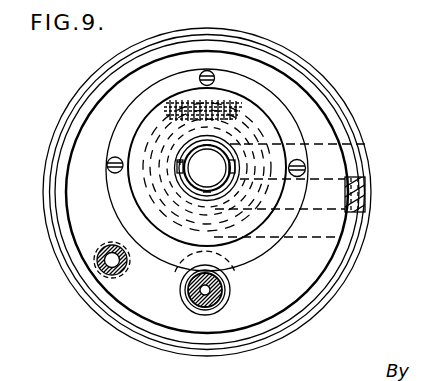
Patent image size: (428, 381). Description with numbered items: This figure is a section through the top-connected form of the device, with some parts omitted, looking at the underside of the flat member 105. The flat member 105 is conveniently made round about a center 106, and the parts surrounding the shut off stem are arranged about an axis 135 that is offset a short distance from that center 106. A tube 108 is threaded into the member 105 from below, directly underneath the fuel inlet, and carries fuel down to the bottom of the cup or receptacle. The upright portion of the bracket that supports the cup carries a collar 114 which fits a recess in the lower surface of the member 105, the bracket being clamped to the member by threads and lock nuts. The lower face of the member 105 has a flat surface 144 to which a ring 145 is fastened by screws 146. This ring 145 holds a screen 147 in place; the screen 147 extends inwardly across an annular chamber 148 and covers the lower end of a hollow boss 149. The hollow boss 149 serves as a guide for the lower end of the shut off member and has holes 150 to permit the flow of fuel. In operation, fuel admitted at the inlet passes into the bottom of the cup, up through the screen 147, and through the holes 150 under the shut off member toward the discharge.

The flat member 105 is at (268, 35).
The center 106 is at (207, 193).
The tube 108 is at (112, 242).
The collar 114 is at (231, 288).
The axis 135 is at (212, 162).
The flat surface 144 is at (207, 192).
The ring 145 is at (270, 98).
The screws 146 is at (112, 158).
The screen 147 is at (192, 111).
The annular chamber 148 is at (248, 167).
The hollow boss 149 is at (237, 158).
The holes 150 is at (210, 144).